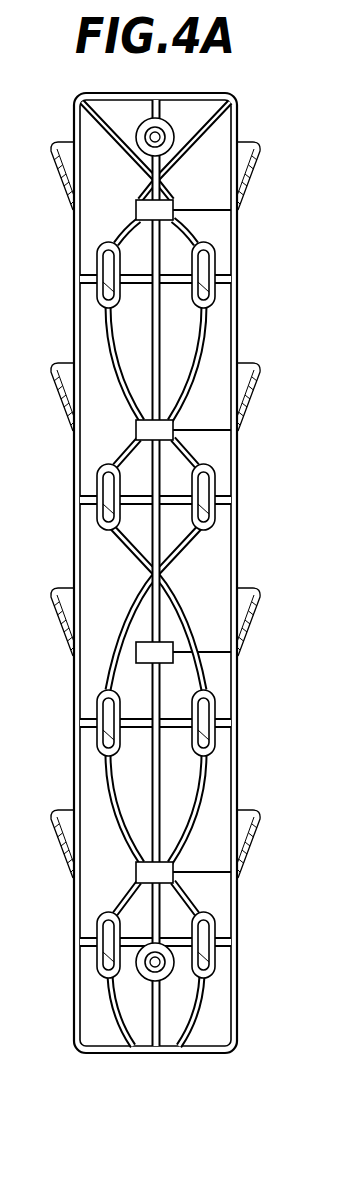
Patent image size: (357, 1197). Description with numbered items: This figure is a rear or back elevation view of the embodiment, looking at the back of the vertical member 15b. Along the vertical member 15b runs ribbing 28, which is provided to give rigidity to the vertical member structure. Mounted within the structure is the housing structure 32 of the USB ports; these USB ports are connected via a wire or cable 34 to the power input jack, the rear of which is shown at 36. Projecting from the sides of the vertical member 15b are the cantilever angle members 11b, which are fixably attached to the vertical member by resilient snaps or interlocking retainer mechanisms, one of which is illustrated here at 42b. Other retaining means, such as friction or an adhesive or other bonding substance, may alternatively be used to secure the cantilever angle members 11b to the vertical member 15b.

The cantilever angle member 11b is at (258, 150).
The vertical member 15b is at (240, 280).
The ribbing 28 is at (205, 344).
The housing structure of USB ports 32 is at (165, 208).
The wire or cable 34 is at (205, 420).
The rear of power input jack 36 is at (158, 900).
The resilient snap or interlocking retainer mechanism 42b is at (205, 716).